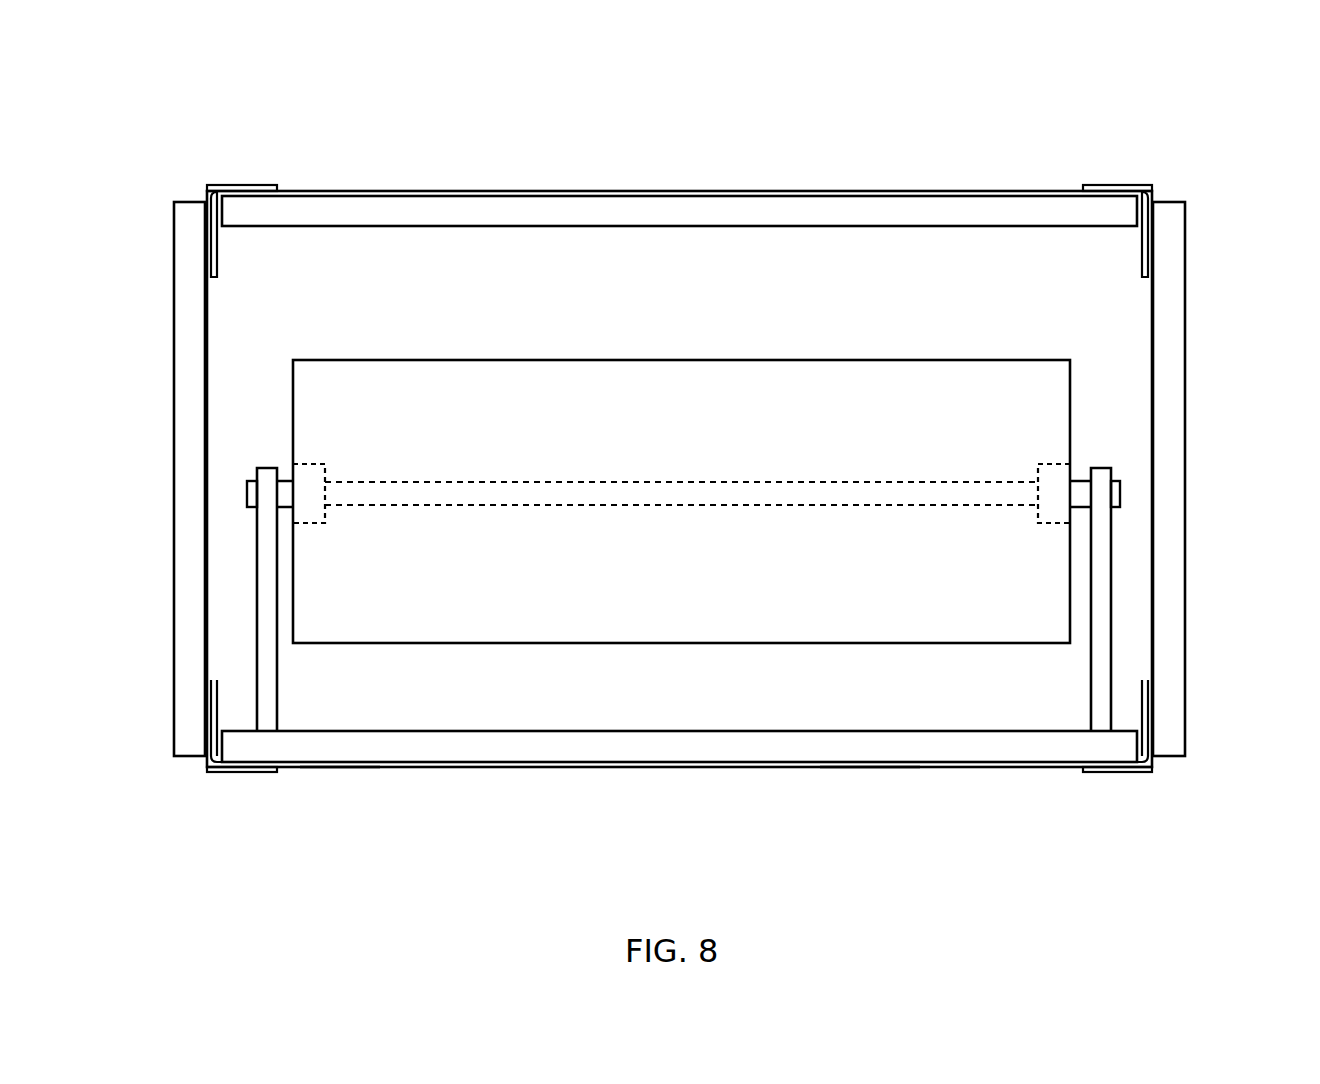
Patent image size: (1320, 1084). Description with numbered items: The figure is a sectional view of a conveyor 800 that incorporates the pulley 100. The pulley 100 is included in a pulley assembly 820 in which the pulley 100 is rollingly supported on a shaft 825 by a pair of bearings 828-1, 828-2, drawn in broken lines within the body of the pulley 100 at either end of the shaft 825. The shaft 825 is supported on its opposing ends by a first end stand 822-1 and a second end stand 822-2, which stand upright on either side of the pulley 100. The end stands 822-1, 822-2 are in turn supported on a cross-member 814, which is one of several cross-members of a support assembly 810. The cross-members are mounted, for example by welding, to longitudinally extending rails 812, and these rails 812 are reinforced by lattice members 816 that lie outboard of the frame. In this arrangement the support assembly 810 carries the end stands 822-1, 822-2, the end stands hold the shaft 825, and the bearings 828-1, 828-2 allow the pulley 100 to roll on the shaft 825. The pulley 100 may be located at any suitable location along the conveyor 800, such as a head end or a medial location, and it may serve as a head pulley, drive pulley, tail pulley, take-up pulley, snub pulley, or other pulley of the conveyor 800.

The conveyor 800 is at (508, 90).
The pulley assembly 820 is at (736, 297).
The longitudinally extending rails 812 is at (243, 185).
The lattice members 816 is at (1185, 392).
The support assembly 810 is at (340, 772).
The cross-member 814 is at (868, 767).
The first end stand 822-1 is at (278, 698).
The second end stand 822-2 is at (1092, 695).
The shaft 825 is at (1122, 494).
The pulley 100 is at (748, 644).
The bearing 828-1 is at (304, 464).
The bearing 828-2 is at (1047, 463).